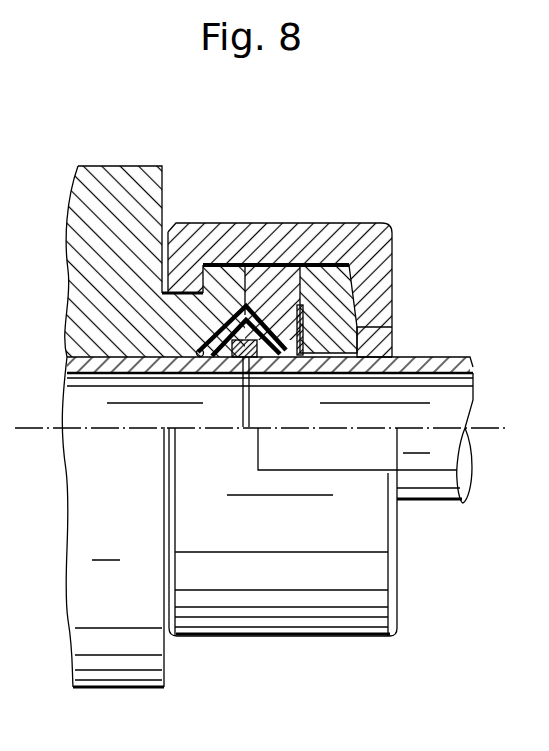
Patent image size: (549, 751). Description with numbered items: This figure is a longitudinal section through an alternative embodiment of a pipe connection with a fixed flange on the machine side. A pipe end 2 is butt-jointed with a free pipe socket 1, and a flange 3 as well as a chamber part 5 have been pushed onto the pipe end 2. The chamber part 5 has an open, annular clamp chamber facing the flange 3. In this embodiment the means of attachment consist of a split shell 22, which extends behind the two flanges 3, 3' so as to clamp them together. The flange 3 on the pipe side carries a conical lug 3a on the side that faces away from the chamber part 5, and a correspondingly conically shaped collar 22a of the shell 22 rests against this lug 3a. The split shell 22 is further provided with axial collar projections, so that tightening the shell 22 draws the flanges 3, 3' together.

The free pipe socket 1 is at (220, 366).
The pipe end 2 is at (458, 362).
The flange 3 is at (331, 260).
The flange 3' is at (212, 261).
The conical lug 3a is at (343, 285).
The chamber part 5 is at (267, 278).
The split shell 22 is at (297, 232).
The conically shaped collar 22a is at (357, 310).